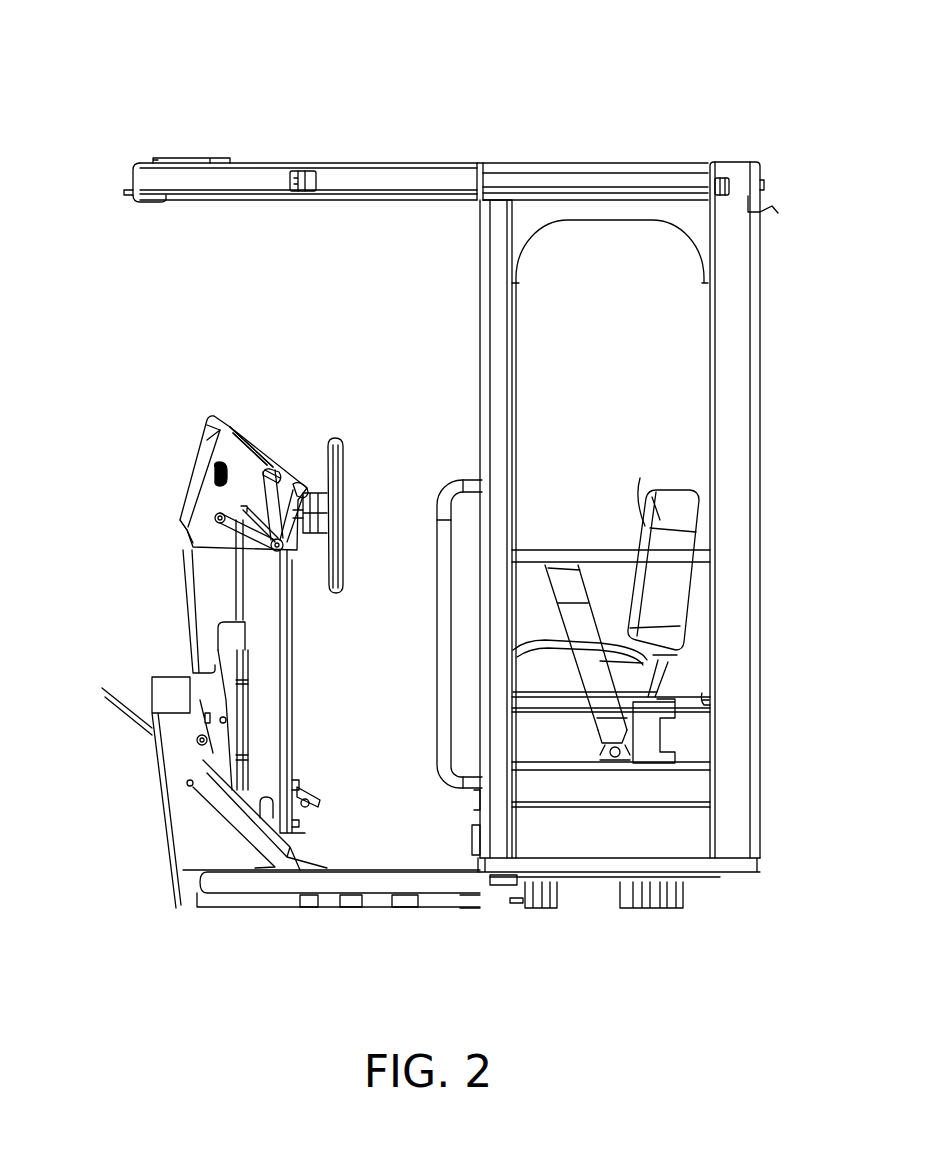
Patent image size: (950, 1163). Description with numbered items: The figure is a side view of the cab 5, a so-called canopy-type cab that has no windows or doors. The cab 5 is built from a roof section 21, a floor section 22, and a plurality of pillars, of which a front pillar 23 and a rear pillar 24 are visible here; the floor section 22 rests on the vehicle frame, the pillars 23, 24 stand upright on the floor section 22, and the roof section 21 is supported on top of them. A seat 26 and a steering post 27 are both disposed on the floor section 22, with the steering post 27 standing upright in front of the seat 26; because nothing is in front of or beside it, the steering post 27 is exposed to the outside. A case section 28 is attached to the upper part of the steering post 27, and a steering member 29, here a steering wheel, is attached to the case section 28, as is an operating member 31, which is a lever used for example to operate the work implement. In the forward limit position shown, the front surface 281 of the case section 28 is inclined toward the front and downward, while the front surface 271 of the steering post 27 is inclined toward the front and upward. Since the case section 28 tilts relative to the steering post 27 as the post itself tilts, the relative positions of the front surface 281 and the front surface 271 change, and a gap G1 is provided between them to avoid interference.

The cab 5 is at (275, 98).
The roof section 21 is at (438, 178).
The floor section 22 is at (390, 869).
The pillar 23 is at (490, 326).
The pillar 24 is at (733, 341).
The cab seat 26 is at (641, 480).
The steering post 27 is at (272, 655).
The front surface of the steering post 271 is at (190, 636).
The case section 28 is at (200, 464).
The front surface of the case section 281 is at (188, 496).
The gap G1 is at (183, 532).
The steering member 29 is at (333, 436).
The operating member 31 is at (277, 465).